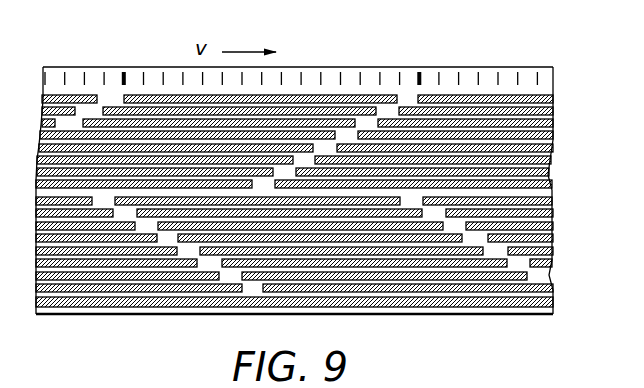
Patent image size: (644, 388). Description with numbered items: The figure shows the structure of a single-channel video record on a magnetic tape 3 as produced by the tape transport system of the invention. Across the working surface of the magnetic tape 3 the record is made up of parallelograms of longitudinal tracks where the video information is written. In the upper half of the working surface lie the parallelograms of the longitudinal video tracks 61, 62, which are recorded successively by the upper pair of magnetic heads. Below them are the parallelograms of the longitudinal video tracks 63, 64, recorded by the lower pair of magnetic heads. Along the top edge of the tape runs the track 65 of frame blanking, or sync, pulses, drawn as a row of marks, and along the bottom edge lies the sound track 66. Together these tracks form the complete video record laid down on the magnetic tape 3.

The magnetic tape 3 is at (348, 67).
The longitudinal video track 61 is at (555, 96).
The longitudinal video track 62 is at (553, 110).
The longitudinal video track 63 is at (547, 202).
The longitudinal video track 64 is at (550, 213).
The track of sync pulses 65 is at (75, 80).
The sound track 66 is at (552, 304).